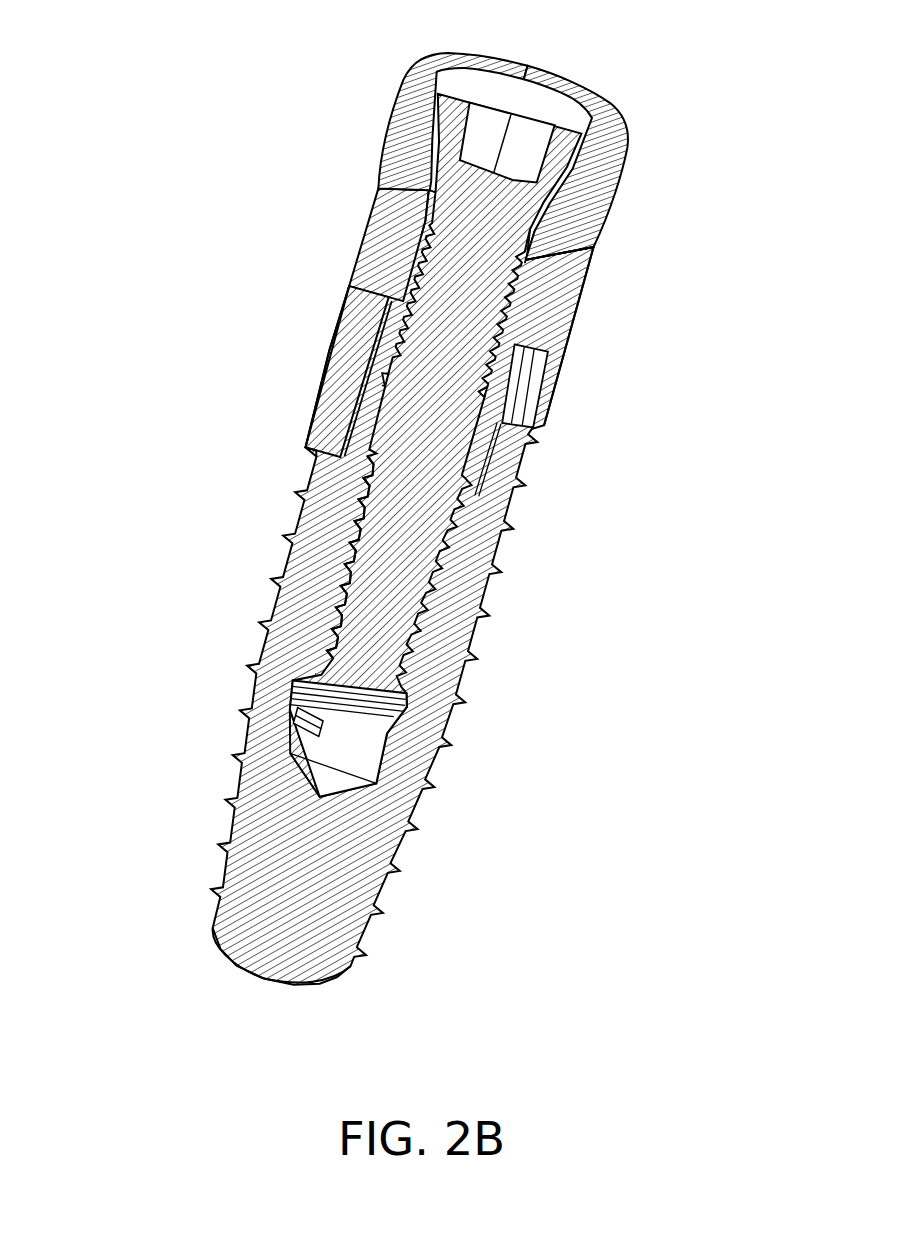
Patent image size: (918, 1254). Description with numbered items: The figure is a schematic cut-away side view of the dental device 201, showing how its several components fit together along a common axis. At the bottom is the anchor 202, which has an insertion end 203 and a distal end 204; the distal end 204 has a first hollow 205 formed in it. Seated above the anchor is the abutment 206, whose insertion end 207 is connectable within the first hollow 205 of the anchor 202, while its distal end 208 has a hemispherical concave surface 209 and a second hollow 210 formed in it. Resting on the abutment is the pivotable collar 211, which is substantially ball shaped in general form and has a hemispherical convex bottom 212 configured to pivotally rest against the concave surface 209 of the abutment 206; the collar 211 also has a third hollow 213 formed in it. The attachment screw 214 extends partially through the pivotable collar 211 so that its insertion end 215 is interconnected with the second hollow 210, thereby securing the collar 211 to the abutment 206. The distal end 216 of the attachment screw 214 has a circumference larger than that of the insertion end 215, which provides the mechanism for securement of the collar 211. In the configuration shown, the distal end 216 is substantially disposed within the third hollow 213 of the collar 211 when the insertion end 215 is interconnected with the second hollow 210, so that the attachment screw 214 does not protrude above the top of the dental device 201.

The dental device 201 is at (180, 562).
The anchor 202 is at (432, 874).
The insertion end 203 is at (330, 968).
The distal end 204 is at (560, 380).
The first hollow 205 is at (338, 488).
The abutment 206 is at (435, 514).
The insertion end 207 is at (358, 747).
The distal end 208 is at (560, 300).
The hemispherical concave surface 209 is at (403, 207).
The second hollow 210 is at (400, 372).
The pivotable collar 211 is at (605, 187).
The hemispherical convex bottom 212 is at (596, 251).
The third hollow 213 is at (432, 134).
The attachment screw 214 is at (445, 290).
The insertion end 215 is at (343, 423).
The distal end 216 is at (466, 114).